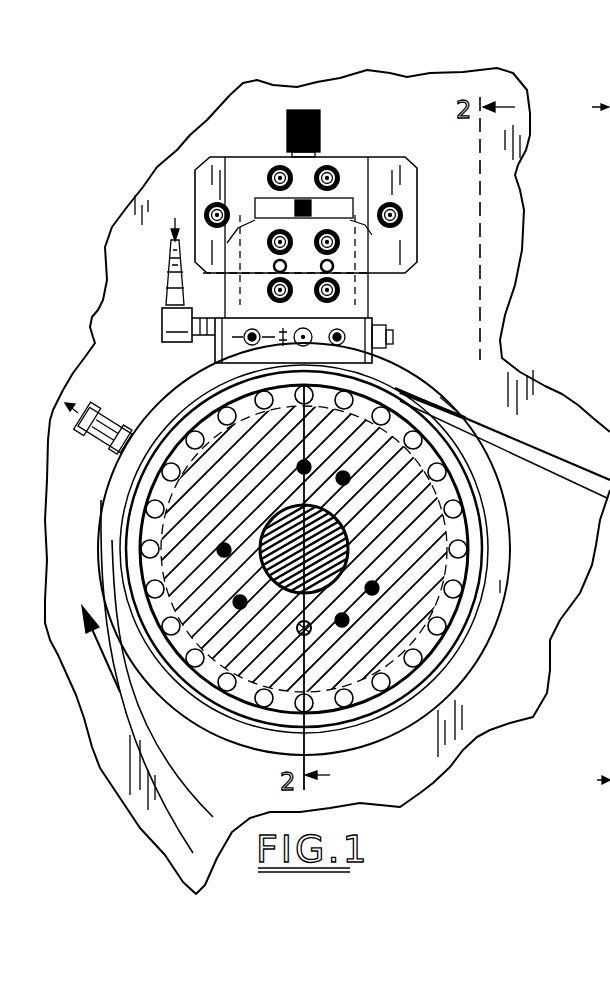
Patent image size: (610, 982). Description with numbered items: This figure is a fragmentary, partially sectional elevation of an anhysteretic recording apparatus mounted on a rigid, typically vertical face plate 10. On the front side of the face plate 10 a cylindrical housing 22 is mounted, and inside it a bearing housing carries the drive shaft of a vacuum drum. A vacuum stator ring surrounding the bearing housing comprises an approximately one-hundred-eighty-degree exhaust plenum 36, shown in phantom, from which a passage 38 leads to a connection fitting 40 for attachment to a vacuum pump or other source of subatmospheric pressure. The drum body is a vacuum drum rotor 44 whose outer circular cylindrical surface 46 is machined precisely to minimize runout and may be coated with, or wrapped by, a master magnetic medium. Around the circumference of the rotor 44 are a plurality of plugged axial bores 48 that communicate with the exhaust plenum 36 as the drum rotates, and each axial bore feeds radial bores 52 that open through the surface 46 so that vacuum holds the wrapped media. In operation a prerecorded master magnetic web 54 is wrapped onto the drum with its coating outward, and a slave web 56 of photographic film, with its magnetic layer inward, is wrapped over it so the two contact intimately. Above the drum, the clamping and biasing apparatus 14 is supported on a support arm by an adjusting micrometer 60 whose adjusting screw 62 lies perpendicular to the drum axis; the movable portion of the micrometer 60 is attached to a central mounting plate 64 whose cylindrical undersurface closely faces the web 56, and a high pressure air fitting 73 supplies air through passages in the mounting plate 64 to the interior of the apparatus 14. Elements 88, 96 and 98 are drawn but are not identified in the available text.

The face plate 10 is at (395, 92).
The apparatus for pneumatically clamping and magnetically biasing recording media 14 is at (386, 334).
The cylindrical housing 22 is at (497, 600).
The exhaust plenum 36 is at (368, 455).
The passage 38 is at (205, 468).
The connection fitting 40 is at (100, 442).
The vacuum drum rotor 44 is at (465, 605).
The outer circular cylindrical surface 46 is at (445, 694).
The axial bores 48 is at (500, 568).
The radial bores 52 is at (488, 533).
The master magnetic tape or web 54 is at (562, 480).
The web of photographic film 56 is at (575, 463).
The adjusting micrometer 60 is at (346, 157).
The adjusting screw 62 is at (288, 130).
The central mounting plate 64 is at (378, 262).
The high pressure air fitting 73 is at (168, 260).
The manifold bar 88 is at (362, 318).
The retaining nut 96 is at (390, 356).
The air fitting 98 is at (215, 352).